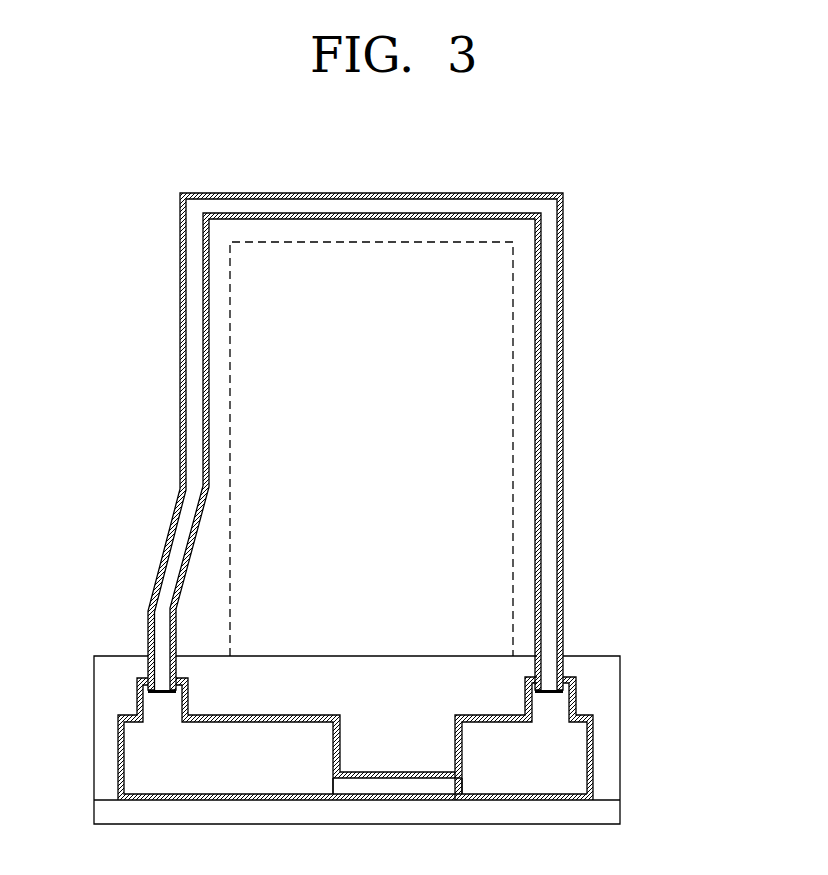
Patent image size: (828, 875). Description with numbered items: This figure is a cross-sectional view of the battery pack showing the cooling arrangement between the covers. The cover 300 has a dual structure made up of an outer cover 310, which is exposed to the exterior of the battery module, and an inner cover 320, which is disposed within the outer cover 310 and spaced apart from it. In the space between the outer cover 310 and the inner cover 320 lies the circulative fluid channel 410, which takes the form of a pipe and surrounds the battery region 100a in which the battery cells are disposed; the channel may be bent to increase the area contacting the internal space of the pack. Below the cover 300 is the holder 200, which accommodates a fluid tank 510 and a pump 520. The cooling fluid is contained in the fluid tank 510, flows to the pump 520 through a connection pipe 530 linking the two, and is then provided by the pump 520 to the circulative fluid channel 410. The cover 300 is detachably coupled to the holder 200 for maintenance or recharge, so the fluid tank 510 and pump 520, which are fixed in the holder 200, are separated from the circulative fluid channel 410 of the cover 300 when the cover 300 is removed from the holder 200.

The cover 300 is at (362, 442).
The outer cover 310 is at (563, 457).
The circulative fluid channel 410 is at (548, 335).
The inner cover 320 is at (529, 404).
The battery region 100a is at (513, 288).
The holder 200 is at (402, 765).
The fluid tank 510 is at (234, 782).
The pump 520 is at (531, 782).
The connection pipe 530 is at (398, 790).